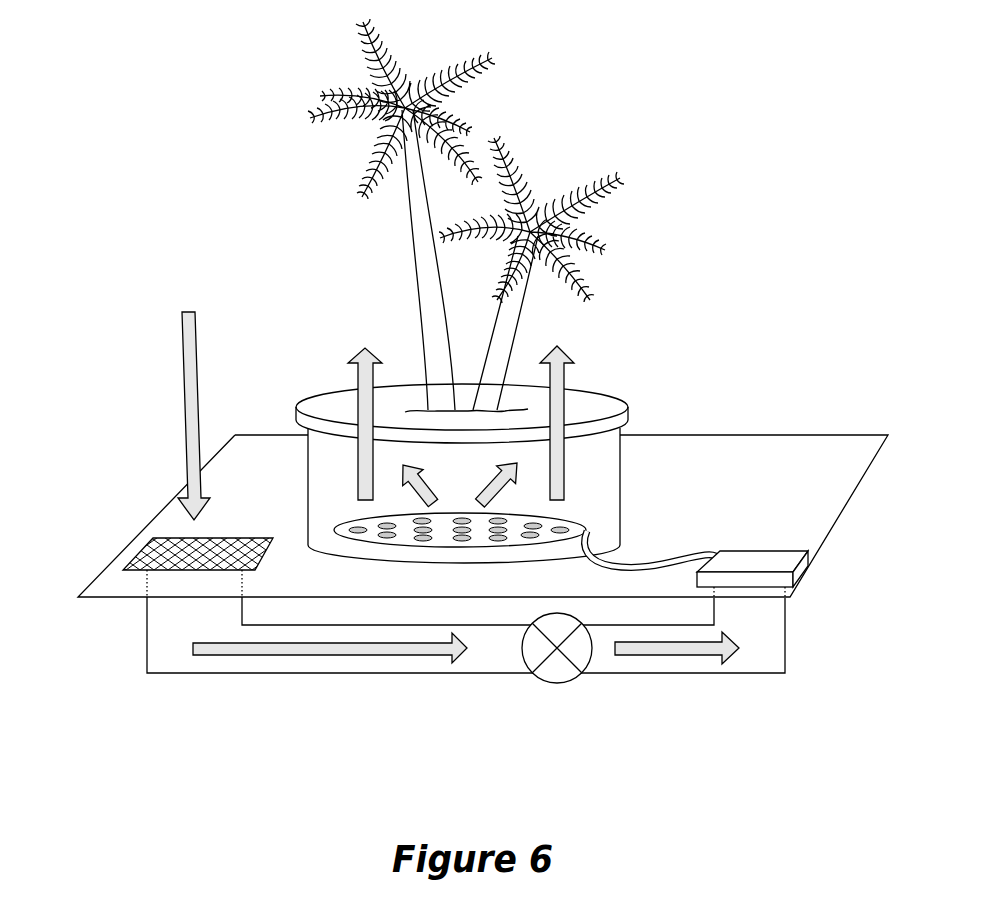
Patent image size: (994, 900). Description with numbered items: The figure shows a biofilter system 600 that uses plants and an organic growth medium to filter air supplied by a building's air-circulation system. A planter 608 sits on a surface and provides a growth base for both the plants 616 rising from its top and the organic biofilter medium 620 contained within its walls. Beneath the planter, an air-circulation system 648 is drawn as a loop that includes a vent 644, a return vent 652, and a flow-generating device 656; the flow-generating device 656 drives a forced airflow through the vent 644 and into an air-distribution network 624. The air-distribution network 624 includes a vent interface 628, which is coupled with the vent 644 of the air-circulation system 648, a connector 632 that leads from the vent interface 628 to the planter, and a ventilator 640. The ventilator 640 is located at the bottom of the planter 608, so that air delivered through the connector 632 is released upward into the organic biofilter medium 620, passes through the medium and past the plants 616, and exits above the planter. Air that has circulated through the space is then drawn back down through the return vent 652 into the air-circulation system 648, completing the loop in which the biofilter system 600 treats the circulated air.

The biofilter system 600 is at (241, 120).
The planter 608 is at (502, 458).
The plants 616 is at (360, 52).
The organic biofilter medium 620 is at (330, 483).
The air-distribution network 624 is at (755, 439).
The vent interface 628 is at (808, 570).
The connector 632 is at (682, 553).
The ventilator 640 is at (585, 522).
The vent 644 is at (788, 600).
The air-circulation system 648 is at (415, 660).
The return vent 652 is at (123, 568).
The flow-generating device 656 is at (542, 683).